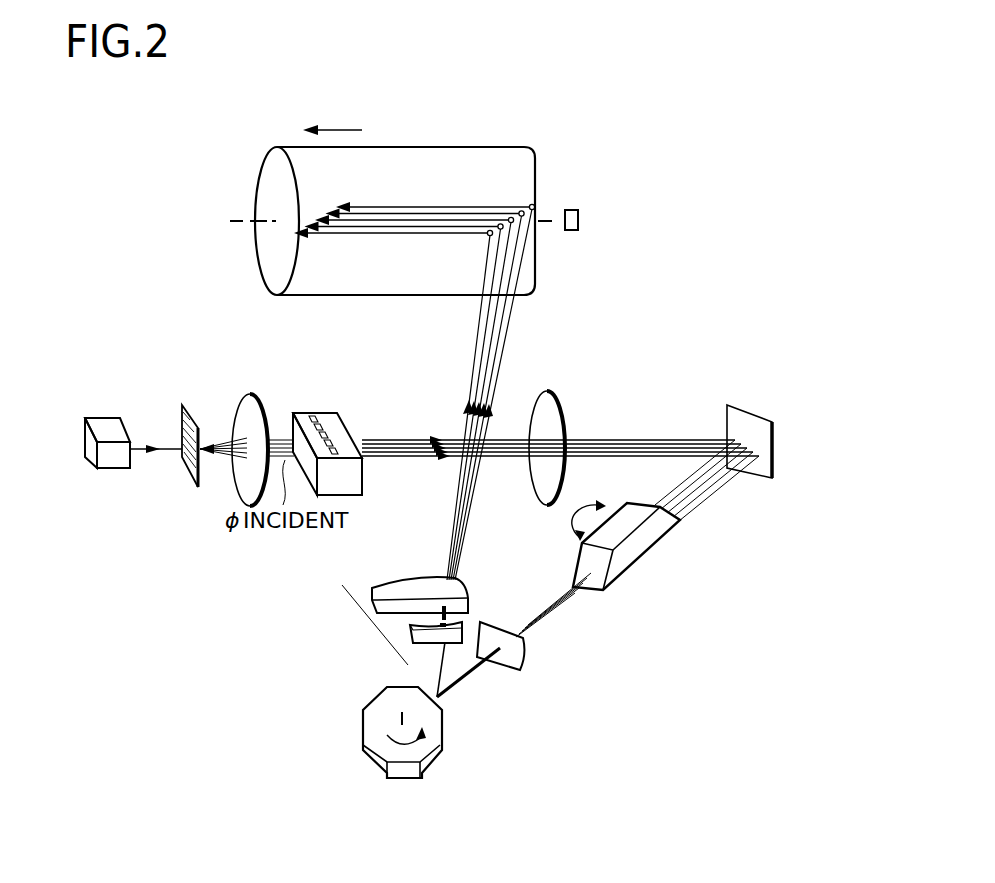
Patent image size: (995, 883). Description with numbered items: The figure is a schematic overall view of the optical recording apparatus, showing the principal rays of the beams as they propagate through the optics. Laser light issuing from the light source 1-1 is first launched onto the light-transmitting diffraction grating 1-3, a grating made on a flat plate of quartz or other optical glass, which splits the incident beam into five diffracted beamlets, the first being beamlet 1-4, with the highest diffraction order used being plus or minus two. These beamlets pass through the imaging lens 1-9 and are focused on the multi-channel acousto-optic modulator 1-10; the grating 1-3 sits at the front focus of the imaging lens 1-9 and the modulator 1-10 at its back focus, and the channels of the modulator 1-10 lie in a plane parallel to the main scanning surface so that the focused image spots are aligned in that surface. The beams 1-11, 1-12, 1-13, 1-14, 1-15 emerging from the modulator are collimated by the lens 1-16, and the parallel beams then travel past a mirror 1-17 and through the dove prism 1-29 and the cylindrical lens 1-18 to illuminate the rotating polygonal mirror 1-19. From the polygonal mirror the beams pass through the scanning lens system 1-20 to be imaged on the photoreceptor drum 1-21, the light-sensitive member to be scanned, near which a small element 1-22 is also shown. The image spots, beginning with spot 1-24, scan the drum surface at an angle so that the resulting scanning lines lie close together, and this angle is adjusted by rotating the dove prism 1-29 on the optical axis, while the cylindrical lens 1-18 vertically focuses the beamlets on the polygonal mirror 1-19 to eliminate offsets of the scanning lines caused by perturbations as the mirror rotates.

The light source 1-1 is at (113, 470).
The light-transmitting diffraction grating 1-3 is at (193, 428).
The diffracted beamlet 1-4 is at (217, 457).
The imaging lens 1-9 is at (248, 395).
The multi-channel acousto-optic modulator 1-10 is at (358, 500).
The beam 1-11 is at (370, 440).
The beam 1-12 is at (400, 438).
The beam 1-13 is at (428, 440).
The beam 1-14 is at (392, 458).
The beam 1-15 is at (425, 460).
The lens 1-16 is at (548, 393).
The reflecting mirror 1-17 is at (748, 410).
The cylindrical lens 1-18 is at (525, 672).
The rotating polygonal mirror 1-19 is at (445, 735).
The scanning lens system 1-20 is at (372, 628).
The photoreceptor drum 1-21 is at (538, 169).
The beam detecting sensor 1-22 is at (580, 220).
The image spot 1-24 is at (453, 215).
The dove prism 1-29 is at (632, 555).